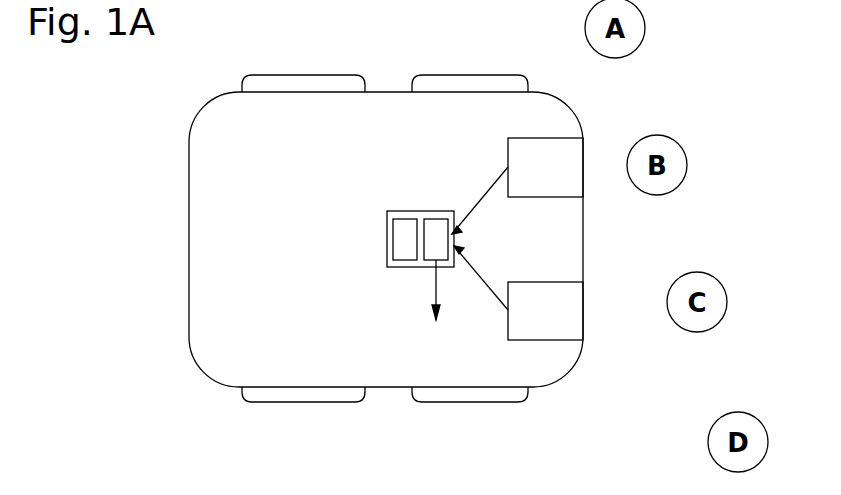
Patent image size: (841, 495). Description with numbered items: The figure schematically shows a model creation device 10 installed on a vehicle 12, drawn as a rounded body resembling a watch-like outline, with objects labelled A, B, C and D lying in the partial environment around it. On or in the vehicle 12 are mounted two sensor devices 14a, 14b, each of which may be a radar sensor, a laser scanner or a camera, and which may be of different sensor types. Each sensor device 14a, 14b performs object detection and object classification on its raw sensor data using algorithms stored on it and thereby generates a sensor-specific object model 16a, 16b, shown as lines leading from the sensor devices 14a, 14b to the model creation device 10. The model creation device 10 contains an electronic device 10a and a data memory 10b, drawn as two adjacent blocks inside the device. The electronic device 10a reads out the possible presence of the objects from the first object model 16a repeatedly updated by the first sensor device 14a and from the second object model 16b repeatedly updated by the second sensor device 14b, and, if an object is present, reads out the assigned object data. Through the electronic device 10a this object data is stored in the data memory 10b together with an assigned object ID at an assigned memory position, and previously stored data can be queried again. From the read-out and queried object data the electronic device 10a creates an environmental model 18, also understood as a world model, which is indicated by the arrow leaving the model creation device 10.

The model creation device 10 is at (387, 240).
The electronic device 10a is at (436, 219).
The data memory 10b is at (405, 219).
The vehicle 12 is at (217, 388).
The first sensor device 14a is at (568, 182).
The second sensor device 14b is at (568, 325).
The first object model 16a is at (470, 205).
The second object model 16b is at (478, 272).
The environmental model 18 is at (436, 291).